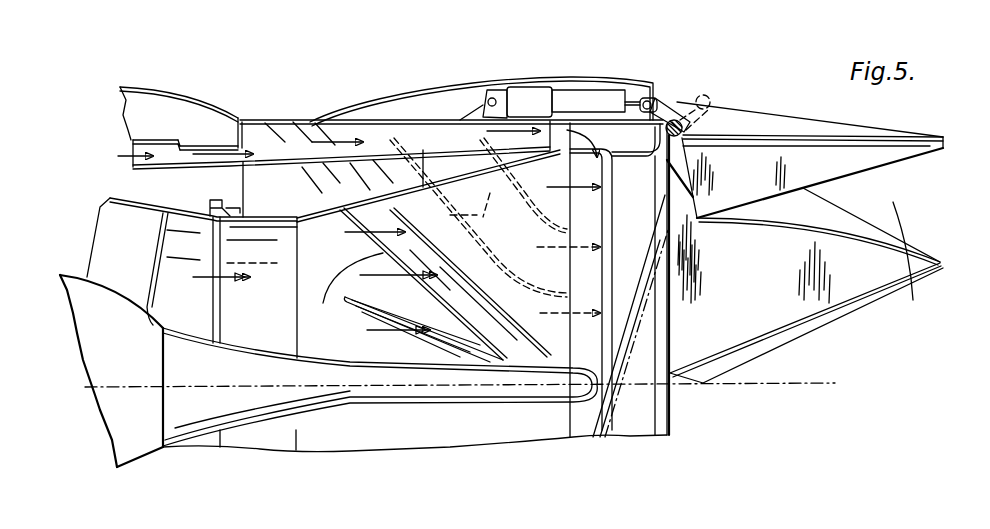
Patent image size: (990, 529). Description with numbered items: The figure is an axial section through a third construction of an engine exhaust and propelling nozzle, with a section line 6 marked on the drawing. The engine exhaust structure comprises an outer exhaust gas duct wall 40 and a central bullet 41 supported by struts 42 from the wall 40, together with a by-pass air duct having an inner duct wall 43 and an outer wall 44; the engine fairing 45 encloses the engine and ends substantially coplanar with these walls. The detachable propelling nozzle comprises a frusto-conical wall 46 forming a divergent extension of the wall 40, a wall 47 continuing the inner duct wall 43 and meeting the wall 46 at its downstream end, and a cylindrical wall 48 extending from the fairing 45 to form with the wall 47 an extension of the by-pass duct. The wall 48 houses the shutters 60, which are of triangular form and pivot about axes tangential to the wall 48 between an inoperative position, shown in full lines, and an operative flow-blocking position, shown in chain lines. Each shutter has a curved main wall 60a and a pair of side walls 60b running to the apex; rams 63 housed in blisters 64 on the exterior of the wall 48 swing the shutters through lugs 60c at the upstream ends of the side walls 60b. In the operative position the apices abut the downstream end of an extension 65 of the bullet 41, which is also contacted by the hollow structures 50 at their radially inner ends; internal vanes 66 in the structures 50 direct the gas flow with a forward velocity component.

The section line 6 is at (463, 45).
The outer exhaust gas duct wall 40 is at (117, 197).
The central bullet 41 is at (105, 412).
The struts 42 is at (110, 225).
The inner duct wall 43 is at (133, 166).
The outer wall 44 is at (143, 140).
The engine fairing 45 is at (147, 83).
The frusto-conical wall 46 is at (313, 213).
The wall 47 is at (262, 163).
The cylindrical wall 48 is at (302, 118).
The hollow structures 50 is at (367, 305).
The shutters 60 is at (834, 223).
The curved main wall 60a is at (867, 157).
The side walls 60b is at (738, 112).
The lugs 60c is at (695, 100).
The rams 63 is at (577, 97).
The blisters 64 is at (515, 83).
The extension 65 is at (460, 393).
The internal vanes 66 is at (495, 225).